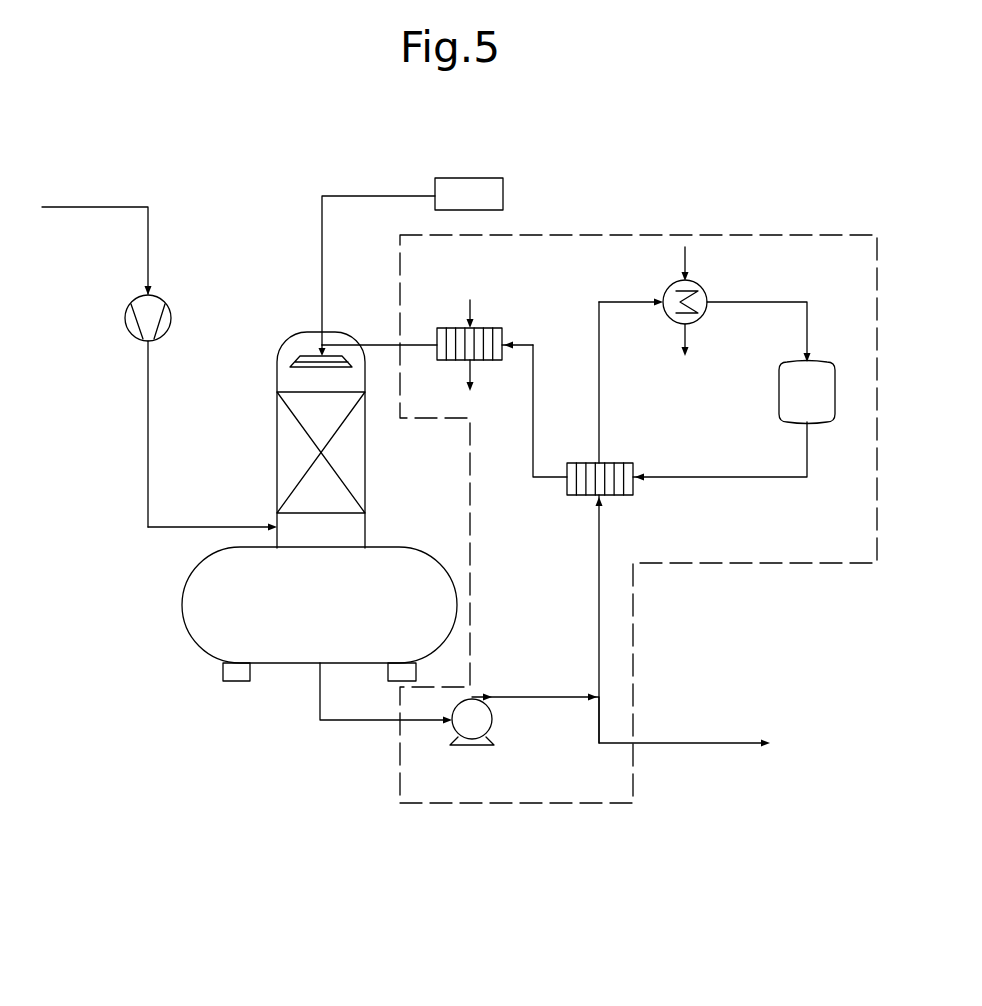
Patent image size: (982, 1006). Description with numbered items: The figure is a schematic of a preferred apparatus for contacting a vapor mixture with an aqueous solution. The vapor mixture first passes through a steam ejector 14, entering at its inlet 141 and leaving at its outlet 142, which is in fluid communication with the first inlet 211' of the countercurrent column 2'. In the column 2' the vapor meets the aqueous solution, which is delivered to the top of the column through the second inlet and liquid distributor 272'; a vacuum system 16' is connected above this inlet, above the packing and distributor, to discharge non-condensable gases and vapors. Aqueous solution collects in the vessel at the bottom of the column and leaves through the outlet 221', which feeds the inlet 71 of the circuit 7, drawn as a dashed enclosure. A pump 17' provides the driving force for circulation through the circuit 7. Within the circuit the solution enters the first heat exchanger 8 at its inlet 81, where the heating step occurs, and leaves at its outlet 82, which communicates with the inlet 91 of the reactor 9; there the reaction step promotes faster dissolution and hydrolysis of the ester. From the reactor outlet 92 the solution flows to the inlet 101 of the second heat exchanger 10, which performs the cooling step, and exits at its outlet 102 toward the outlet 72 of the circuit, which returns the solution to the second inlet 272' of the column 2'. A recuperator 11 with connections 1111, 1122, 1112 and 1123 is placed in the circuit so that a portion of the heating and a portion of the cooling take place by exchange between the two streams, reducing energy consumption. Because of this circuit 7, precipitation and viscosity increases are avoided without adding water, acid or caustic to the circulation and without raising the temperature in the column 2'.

The circuit 7 is at (485, 805).
The steam ejector 14 is at (126, 316).
The inlet 141 is at (116, 252).
The outlet 142 is at (169, 434).
The first inlet 211' is at (212, 510).
The countercurrent column 2' is at (344, 440).
The liquid distributor 272' is at (308, 331).
The vacuum system 16' is at (423, 233).
The outlet 72 is at (379, 330).
The second heat exchanger 10 is at (490, 330).
The outlet 102 is at (435, 342).
The inlet 101 is at (523, 326).
The line from heat exchanger 11 to heat exchanger 10 1123 is at (537, 432).
The recuperator 11 is at (622, 495).
The heat exchanger inlet line 1111 is at (574, 619).
The heat exchanger outlet line 1122 is at (624, 382).
The heat exchanger inlet line 1112 is at (720, 451).
The inlet 81 is at (631, 287).
The first heat exchanger 8 is at (692, 286).
The outlet 82 is at (759, 314).
The inlet 91 is at (827, 347).
The reactor 9 is at (817, 406).
The outlet 92 is at (827, 444).
The outlet 221' is at (319, 623).
The inlet 71 is at (386, 711).
The pump 17' is at (610, 741).